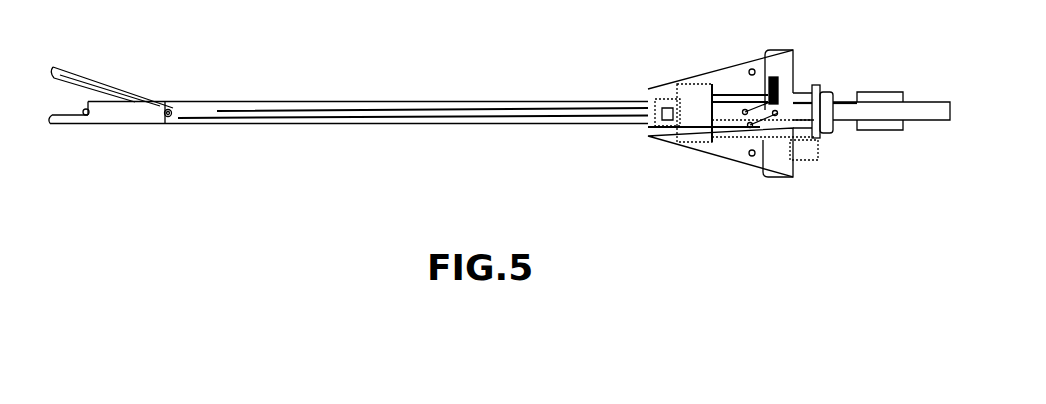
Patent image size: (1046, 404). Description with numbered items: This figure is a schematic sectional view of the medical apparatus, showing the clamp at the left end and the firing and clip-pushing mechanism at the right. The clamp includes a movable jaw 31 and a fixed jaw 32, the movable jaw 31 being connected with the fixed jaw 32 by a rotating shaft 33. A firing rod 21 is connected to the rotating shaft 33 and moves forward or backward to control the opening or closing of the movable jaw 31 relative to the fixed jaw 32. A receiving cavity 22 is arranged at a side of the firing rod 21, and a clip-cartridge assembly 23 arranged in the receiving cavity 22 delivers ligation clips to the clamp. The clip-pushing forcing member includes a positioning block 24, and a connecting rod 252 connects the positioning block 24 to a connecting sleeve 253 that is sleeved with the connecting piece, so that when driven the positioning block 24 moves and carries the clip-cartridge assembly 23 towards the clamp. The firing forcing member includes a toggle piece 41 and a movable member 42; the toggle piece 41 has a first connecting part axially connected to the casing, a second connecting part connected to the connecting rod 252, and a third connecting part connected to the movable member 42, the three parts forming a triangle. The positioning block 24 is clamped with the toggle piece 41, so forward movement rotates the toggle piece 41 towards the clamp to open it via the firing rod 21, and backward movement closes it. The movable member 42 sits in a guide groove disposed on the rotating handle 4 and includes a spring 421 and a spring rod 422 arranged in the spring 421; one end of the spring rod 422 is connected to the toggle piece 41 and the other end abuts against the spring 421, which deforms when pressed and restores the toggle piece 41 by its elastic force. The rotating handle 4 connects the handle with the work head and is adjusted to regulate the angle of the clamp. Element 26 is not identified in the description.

The rotating handle 4 is at (720, 68).
The firing rod 21 is at (255, 124).
The receiving cavity 22 is at (250, 101).
The clip-cartridge assembly 23 is at (915, 120).
The positioning block 24 is at (690, 148).
The sleeve 26 is at (878, 96).
The movable jaw 31 is at (75, 72).
The fixed jaw 32 is at (70, 125).
The rotating shaft 33 is at (166, 122).
The toggle piece 41 is at (750, 127).
The movable member 42 is at (795, 66).
The spring 421 is at (776, 107).
The spring rod 422 is at (814, 92).
The connecting rod 252 is at (808, 153).
The connecting sleeve 253 is at (828, 133).